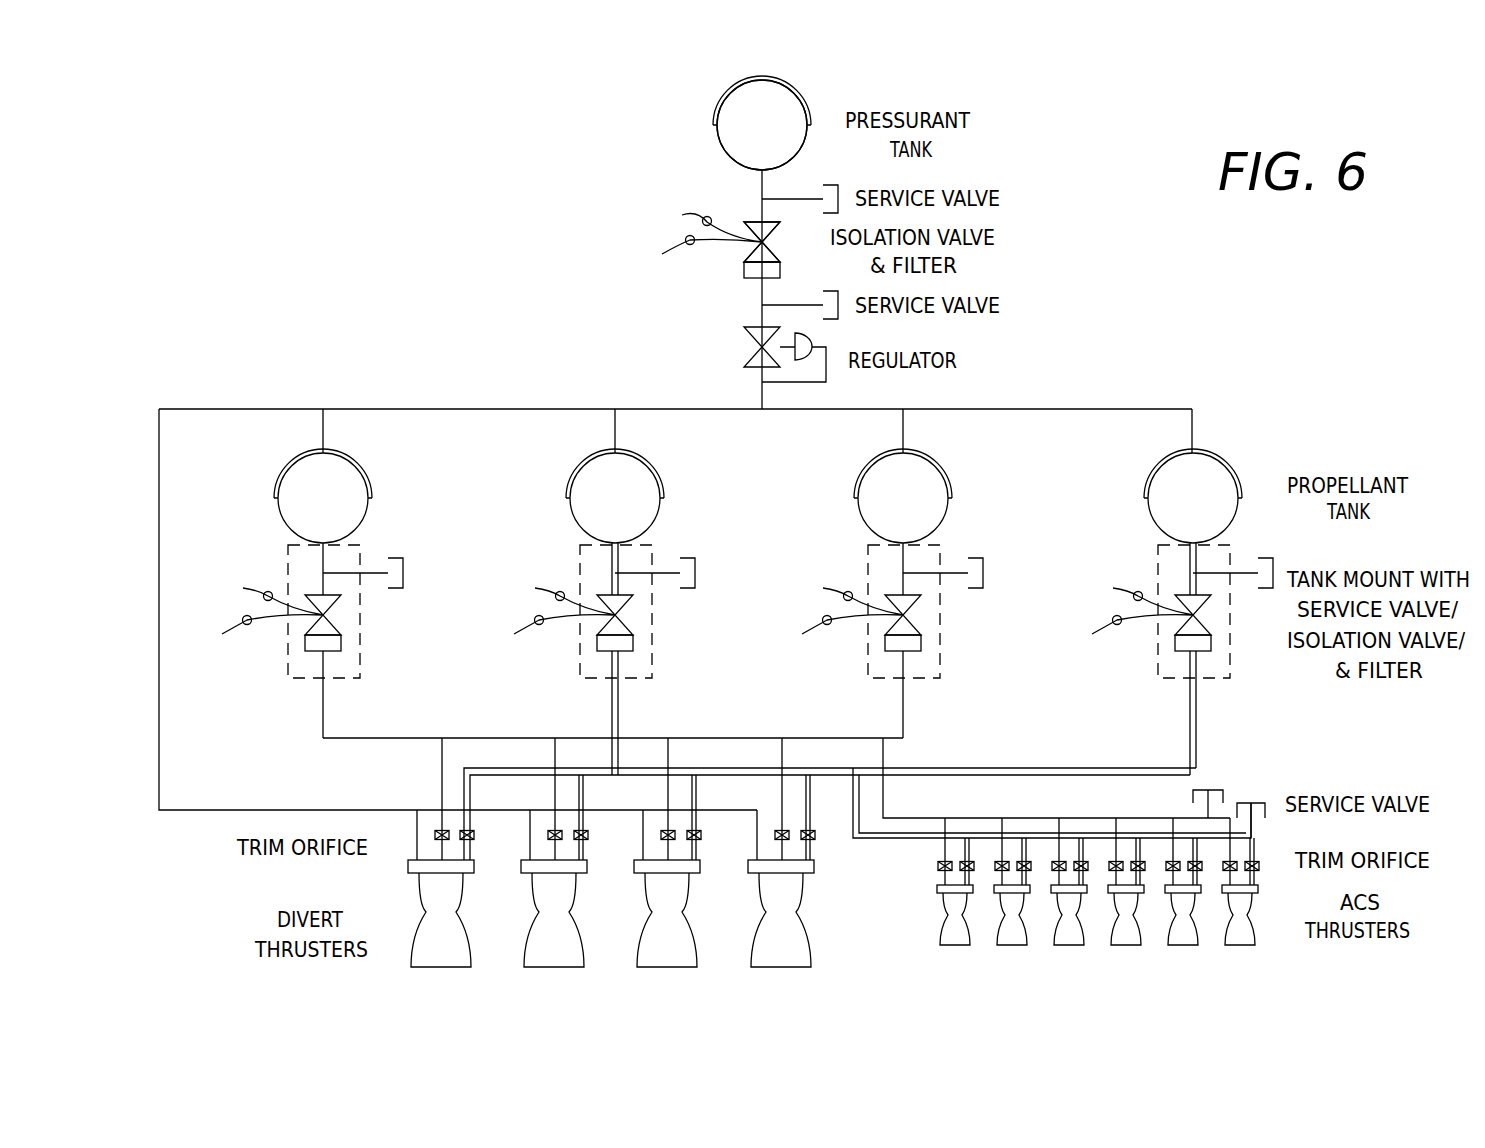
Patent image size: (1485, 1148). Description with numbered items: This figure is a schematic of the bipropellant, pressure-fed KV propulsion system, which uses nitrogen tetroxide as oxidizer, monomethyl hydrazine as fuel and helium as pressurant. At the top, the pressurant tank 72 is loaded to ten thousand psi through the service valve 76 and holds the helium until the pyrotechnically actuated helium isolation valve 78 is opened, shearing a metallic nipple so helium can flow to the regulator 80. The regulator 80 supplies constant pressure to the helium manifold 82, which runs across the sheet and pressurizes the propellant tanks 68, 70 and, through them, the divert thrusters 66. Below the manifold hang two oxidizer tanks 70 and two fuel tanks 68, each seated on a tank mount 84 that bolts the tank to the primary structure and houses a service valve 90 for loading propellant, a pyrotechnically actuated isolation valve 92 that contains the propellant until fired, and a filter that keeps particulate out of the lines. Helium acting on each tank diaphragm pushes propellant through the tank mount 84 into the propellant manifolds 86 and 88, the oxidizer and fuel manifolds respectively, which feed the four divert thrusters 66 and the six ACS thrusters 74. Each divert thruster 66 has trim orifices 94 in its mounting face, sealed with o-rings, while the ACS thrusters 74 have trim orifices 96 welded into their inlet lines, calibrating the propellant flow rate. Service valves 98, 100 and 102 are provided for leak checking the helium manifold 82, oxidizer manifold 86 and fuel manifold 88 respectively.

The pressurant tank 72 is at (717, 128).
The service valve 76 is at (802, 199).
The helium isolation valve 78 is at (745, 268).
The service valve 98 is at (790, 305).
The regulator 80 is at (745, 350).
The helium manifold 82 is at (1027, 409).
The propellant tank 70 is at (366, 480).
The propellant tank 68 is at (658, 478).
The tank mount 84 is at (1158, 547).
The service valve 90 is at (1243, 570).
The isolation valve 92 is at (1177, 638).
The propellant manifold 86 is at (656, 738).
The propellant manifold 88 is at (970, 768).
The trim orifice 94 is at (465, 830).
The trim orifice 96 is at (962, 870).
The service valve 100 is at (1210, 788).
The service valve 102 is at (1252, 802).
The divert thruster 66 is at (528, 937).
The ACS thruster 74 is at (1055, 937).